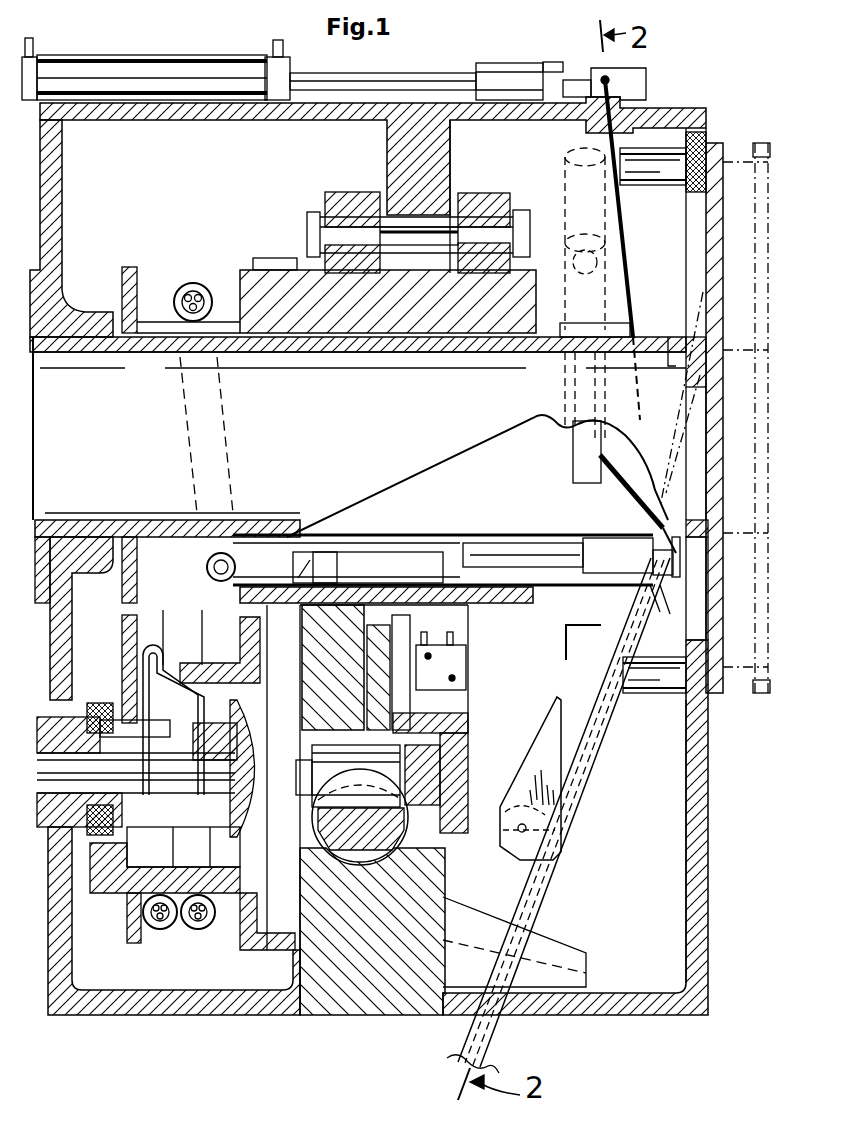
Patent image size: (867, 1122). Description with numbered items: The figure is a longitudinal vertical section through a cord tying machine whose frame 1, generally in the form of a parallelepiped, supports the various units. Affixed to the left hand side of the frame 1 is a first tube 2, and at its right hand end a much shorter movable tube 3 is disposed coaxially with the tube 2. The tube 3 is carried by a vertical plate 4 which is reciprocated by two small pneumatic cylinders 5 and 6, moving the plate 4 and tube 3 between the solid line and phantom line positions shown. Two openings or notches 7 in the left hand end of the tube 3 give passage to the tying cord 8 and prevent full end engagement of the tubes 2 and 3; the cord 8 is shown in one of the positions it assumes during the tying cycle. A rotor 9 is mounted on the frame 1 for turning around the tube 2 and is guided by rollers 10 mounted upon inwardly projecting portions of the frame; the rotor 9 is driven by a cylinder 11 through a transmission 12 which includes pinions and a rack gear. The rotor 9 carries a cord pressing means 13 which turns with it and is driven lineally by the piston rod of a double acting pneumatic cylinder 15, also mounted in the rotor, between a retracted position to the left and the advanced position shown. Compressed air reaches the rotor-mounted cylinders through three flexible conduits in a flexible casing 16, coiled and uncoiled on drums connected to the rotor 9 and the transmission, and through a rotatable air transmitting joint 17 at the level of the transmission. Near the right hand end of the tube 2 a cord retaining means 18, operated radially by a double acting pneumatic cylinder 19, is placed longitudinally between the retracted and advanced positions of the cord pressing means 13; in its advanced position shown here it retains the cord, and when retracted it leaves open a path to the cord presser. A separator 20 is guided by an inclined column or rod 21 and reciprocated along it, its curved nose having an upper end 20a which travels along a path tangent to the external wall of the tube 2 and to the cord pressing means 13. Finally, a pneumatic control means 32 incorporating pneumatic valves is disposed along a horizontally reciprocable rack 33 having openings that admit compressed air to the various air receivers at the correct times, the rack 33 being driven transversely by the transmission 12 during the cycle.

The frame 1 is at (55, 200).
The first tube 2 is at (148, 352).
The movable tube 3 is at (683, 399).
The vertical plate 4 is at (723, 240).
The pneumatic cylinder 5 is at (673, 182).
The pneumatic cylinder 6 is at (663, 697).
The openings or notches 7 is at (667, 337).
The cord 8 is at (630, 228).
The rotor 9 is at (249, 268).
The rollers 10 is at (496, 197).
The cylinder 11 is at (398, 858).
The transmission 12 is at (287, 728).
The cord pressing means 13 is at (646, 573).
The double acting pneumatic cylinder 15 is at (430, 569).
The flexible casing 16 is at (196, 286).
The rotatable air transmitting joint 17 is at (217, 672).
The cord retaining means 18 is at (573, 474).
The double acting pneumatic cylinder 19 is at (578, 200).
The separator 20 is at (521, 766).
The upper end of curved nose 20a is at (550, 696).
The inclined column or rod 21 is at (585, 790).
The pneumatic control means 32 is at (467, 663).
The horizontally reciprocable rack 33 is at (380, 703).